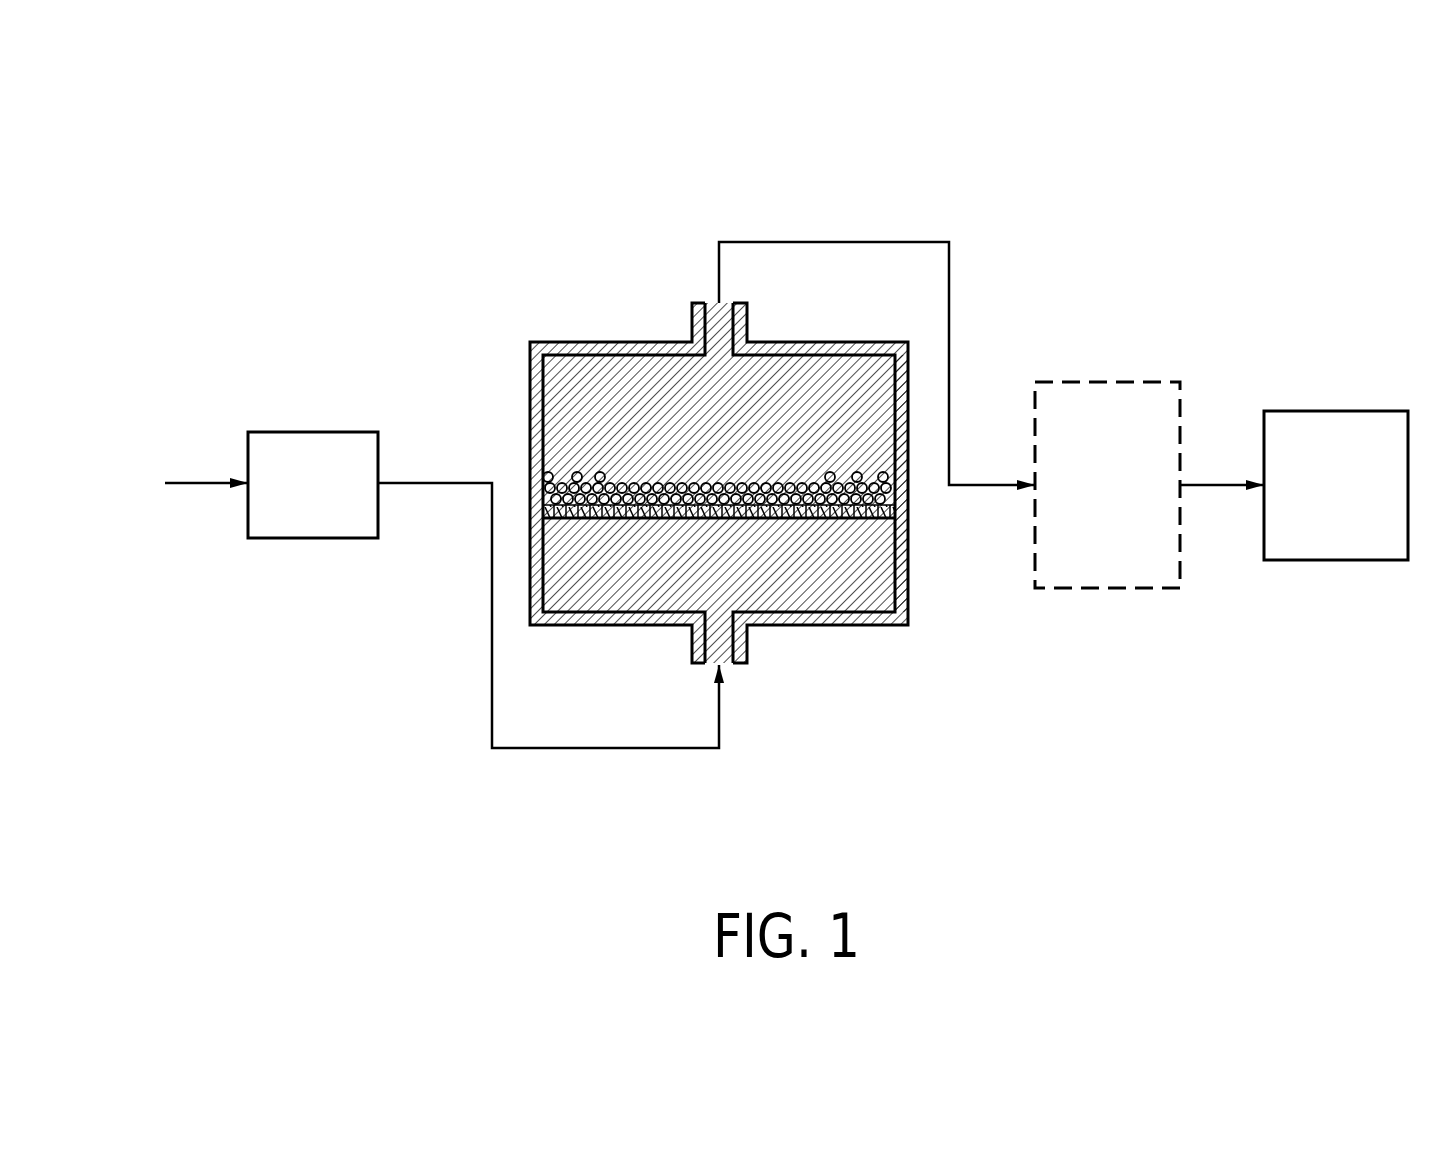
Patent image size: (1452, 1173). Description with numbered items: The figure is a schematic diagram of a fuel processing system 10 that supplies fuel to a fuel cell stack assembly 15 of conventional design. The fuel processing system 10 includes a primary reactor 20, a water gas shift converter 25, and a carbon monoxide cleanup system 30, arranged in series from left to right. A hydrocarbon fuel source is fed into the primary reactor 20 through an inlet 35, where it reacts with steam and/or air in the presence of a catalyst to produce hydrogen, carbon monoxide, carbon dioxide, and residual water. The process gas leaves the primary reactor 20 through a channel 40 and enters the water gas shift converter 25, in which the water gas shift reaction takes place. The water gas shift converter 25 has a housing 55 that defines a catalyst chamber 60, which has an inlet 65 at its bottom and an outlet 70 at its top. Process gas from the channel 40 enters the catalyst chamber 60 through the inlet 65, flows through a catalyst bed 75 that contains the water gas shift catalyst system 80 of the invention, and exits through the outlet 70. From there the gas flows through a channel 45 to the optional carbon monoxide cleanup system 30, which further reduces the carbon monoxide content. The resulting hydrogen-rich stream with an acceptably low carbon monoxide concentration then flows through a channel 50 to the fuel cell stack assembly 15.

The fuel processing system 10 is at (1259, 152).
The fuel cell stack assembly 15 is at (1354, 424).
The primary reactor 20 is at (313, 414).
The water gas shift converter 25 is at (732, 438).
The carbon monoxide cleanup system 30 is at (1117, 423).
The inlet 35 is at (200, 481).
The channel 40 is at (605, 750).
The channel 45 is at (830, 242).
The channel 50 is at (1217, 480).
The housing 55 is at (909, 575).
The catalyst chamber 60 is at (712, 432).
The inlet 65 is at (748, 647).
The outlet 70 is at (748, 327).
The catalyst bed 75 is at (566, 466).
The water gas shift catalyst system 80 is at (847, 481).